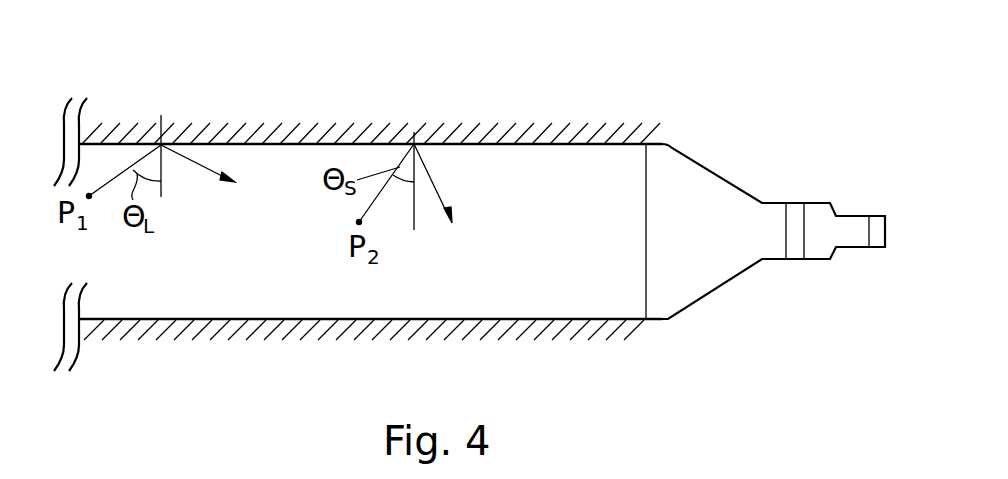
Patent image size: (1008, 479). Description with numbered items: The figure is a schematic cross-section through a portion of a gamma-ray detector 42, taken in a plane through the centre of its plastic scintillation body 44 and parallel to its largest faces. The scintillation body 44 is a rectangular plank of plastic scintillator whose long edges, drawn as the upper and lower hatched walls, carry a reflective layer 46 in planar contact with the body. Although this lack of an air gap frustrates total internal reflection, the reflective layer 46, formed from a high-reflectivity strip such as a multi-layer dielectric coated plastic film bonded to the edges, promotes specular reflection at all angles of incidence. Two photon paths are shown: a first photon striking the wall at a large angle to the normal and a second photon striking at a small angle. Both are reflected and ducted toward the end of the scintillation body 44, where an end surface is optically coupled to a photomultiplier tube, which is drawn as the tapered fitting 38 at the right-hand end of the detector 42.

The gamma-ray detector 42 is at (482, 209).
The scintillation body 44 is at (633, 170).
The reflective layer 46 is at (343, 141).
The light source connector / nozzle 38 is at (723, 291).